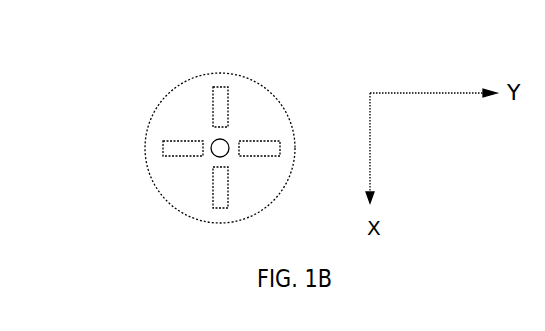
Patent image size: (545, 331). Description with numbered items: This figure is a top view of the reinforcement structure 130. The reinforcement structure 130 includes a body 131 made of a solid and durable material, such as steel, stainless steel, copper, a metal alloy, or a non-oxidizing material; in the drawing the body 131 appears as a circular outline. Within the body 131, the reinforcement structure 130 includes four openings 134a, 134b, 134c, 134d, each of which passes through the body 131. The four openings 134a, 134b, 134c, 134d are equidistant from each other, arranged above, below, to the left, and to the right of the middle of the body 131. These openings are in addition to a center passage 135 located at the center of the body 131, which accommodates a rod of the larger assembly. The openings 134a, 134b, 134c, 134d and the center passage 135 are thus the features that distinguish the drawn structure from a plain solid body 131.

The reinforcement structure 130 is at (157, 70).
The body 131 is at (187, 117).
The opening 134a is at (267, 148).
The opening 134b is at (221, 93).
The opening 134c is at (187, 183).
The opening 134d is at (218, 202).
The center passage 135 is at (222, 146).